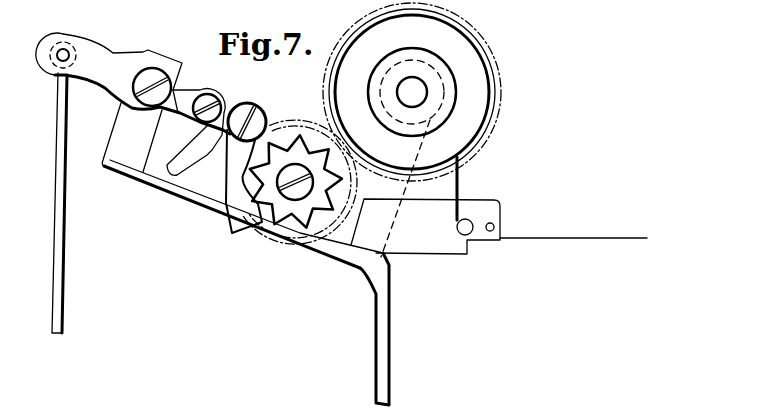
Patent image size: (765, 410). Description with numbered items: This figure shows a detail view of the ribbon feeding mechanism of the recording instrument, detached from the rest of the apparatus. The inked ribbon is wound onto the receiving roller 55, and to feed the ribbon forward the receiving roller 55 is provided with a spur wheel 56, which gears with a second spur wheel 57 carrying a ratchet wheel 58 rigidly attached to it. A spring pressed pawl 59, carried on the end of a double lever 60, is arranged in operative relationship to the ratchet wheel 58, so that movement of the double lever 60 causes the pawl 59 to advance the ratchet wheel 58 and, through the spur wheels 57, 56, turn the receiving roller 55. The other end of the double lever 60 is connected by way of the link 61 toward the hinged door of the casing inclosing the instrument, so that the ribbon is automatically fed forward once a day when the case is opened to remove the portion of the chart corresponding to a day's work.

The receiving roller 55 is at (475, 122).
The spur wheel 56 is at (493, 86).
The second spur wheel 57 is at (293, 121).
The ratchet wheel 58 is at (290, 208).
The spring pressed pawl 59 is at (229, 195).
The double lever 60 is at (115, 58).
The link 61 is at (59, 231).